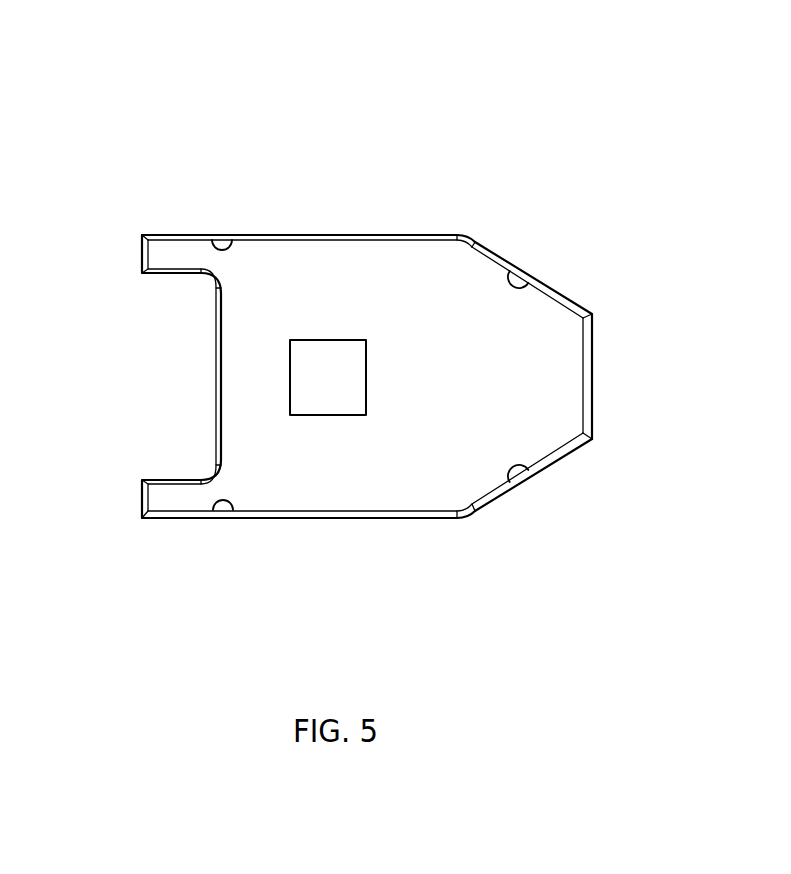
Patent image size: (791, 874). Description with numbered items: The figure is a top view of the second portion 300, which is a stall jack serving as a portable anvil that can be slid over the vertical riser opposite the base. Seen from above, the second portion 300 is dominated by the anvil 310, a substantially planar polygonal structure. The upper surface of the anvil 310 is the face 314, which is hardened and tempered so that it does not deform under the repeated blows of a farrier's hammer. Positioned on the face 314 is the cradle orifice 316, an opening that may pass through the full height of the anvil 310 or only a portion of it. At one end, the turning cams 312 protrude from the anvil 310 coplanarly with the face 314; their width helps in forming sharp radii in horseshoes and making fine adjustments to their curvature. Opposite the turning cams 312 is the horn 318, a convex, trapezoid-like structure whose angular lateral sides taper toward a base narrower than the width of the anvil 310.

The second portion 300 is at (564, 134).
The anvil 310 is at (383, 235).
The turning cams 312 is at (130, 255).
The face 314 is at (414, 396).
The cradle orifice 316 is at (321, 362).
The horn 318 is at (602, 370).